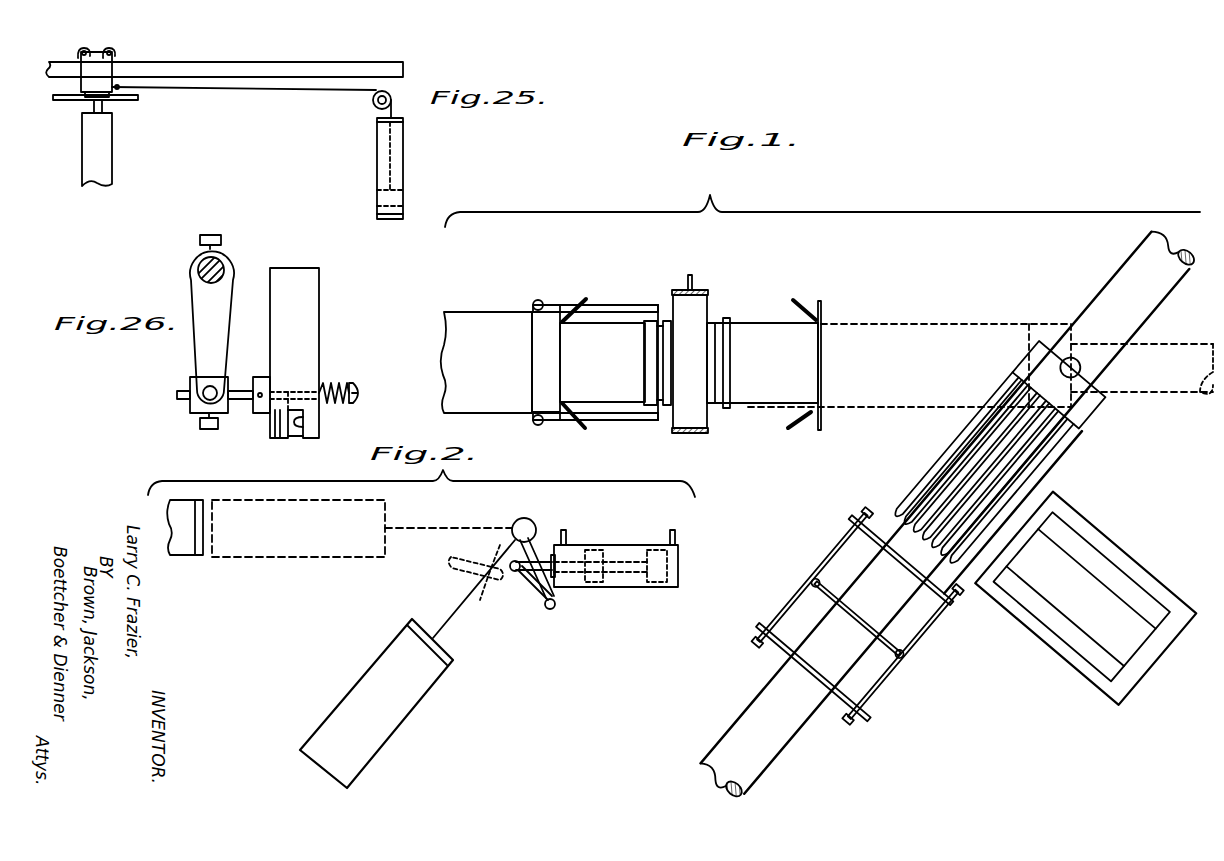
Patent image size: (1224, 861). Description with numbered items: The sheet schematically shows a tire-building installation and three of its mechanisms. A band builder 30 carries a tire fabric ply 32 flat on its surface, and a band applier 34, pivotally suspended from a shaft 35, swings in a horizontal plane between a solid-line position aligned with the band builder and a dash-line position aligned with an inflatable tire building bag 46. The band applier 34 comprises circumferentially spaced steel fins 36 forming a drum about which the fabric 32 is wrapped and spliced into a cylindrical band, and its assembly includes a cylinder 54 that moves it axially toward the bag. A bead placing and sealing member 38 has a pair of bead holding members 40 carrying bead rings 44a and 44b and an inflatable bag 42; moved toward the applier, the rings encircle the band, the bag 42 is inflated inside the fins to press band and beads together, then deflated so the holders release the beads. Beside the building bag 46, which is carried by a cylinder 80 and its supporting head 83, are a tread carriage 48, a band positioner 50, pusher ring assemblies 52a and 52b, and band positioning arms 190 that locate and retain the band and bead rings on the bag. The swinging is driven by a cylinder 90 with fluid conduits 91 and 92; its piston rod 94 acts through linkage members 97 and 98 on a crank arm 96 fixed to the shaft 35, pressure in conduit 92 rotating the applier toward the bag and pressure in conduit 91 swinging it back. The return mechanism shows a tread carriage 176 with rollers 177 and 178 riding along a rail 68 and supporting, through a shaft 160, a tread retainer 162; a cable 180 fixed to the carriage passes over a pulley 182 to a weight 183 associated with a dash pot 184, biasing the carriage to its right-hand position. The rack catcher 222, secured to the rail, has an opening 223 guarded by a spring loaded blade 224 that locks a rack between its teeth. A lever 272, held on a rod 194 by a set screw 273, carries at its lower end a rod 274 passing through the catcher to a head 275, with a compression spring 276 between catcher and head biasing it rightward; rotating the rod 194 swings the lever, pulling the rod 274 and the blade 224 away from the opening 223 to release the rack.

In FIG. 1, the band builder 30 is at (1128, 558).
In FIG. 1, the tire fabric ply 32 is at (726, 318).
In FIG. 1, the band applier 34 is at (932, 324).
In FIG. 2, the band applier 34 is at (340, 558).
In FIG. 1, the shaft 35 is at (1080, 364).
In FIG. 2, the shaft 35 is at (522, 518).
In FIG. 1, the steel fins 36 is at (940, 450).
In FIG. 1, the bead placing and sealing member 38 is at (926, 672).
In FIG. 1, the bead holding members 40 is at (838, 553).
In FIG. 1, the inflatable bag 42 is at (822, 617).
In FIG. 1, the bead ring 44a is at (656, 350).
In FIG. 1, the bead ring 44b is at (790, 372).
In FIG. 1, the tire building bag 46 is at (602, 388).
In FIG. 1, the tread carriage 48 is at (700, 290).
In FIG. 1, the band positioner 50 is at (620, 303).
In FIG. 1, the pusher ring assembly 52a is at (584, 298).
In FIG. 1, the pusher ring assembly 52b is at (806, 306).
In FIG. 1, the cylinder 54 is at (1158, 280).
In FIG. 25, the rail 68 is at (300, 63).
In FIG. 1, the cylinder 80 is at (490, 364).
In FIG. 1, the supporting structure 83 is at (542, 372).
In FIG. 2, the cylinder 90 is at (632, 588).
In FIG. 2, the fluid conduit 91 is at (566, 536).
In FIG. 2, the fluid conduit 92 is at (676, 536).
In FIG. 2, the piston rod 94 is at (540, 552).
In FIG. 2, the crank arm 96 is at (510, 586).
In FIG. 2, the linkage member 97 is at (552, 610).
In FIG. 2, the linkage member 98 is at (460, 578).
In FIG. 25, the shaft 160 is at (106, 107).
In FIG. 25, the tread retainer 162 is at (98, 157).
In FIG. 1, the tread retainer 162 is at (688, 434).
In FIG. 25, the tread carriage 176 is at (105, 72).
In FIG. 25, the roller 177 is at (82, 52).
In FIG. 25, the roller 178 is at (110, 52).
In FIG. 25, the cable 180 is at (292, 91).
In FIG. 25, the pulley 182 is at (372, 104).
In FIG. 25, the weight 183 is at (386, 200).
In FIG. 25, the dash pot 184 is at (380, 142).
In FIG. 1, the band positioning arms 190 is at (638, 305).
In FIG. 26, the rod 194 is at (200, 262).
In FIG. 26, the rack catcher 222 is at (305, 290).
In FIG. 26, the opening 223 is at (306, 424).
In FIG. 26, the spring loaded blade 224 is at (292, 438).
In FIG. 26, the lever 272 is at (200, 350).
In FIG. 26, the set screw 273 is at (222, 241).
In FIG. 26, the rod 274 is at (240, 388).
In FIG. 26, the head 275 is at (358, 386).
In FIG. 26, the compression spring 276 is at (322, 385).